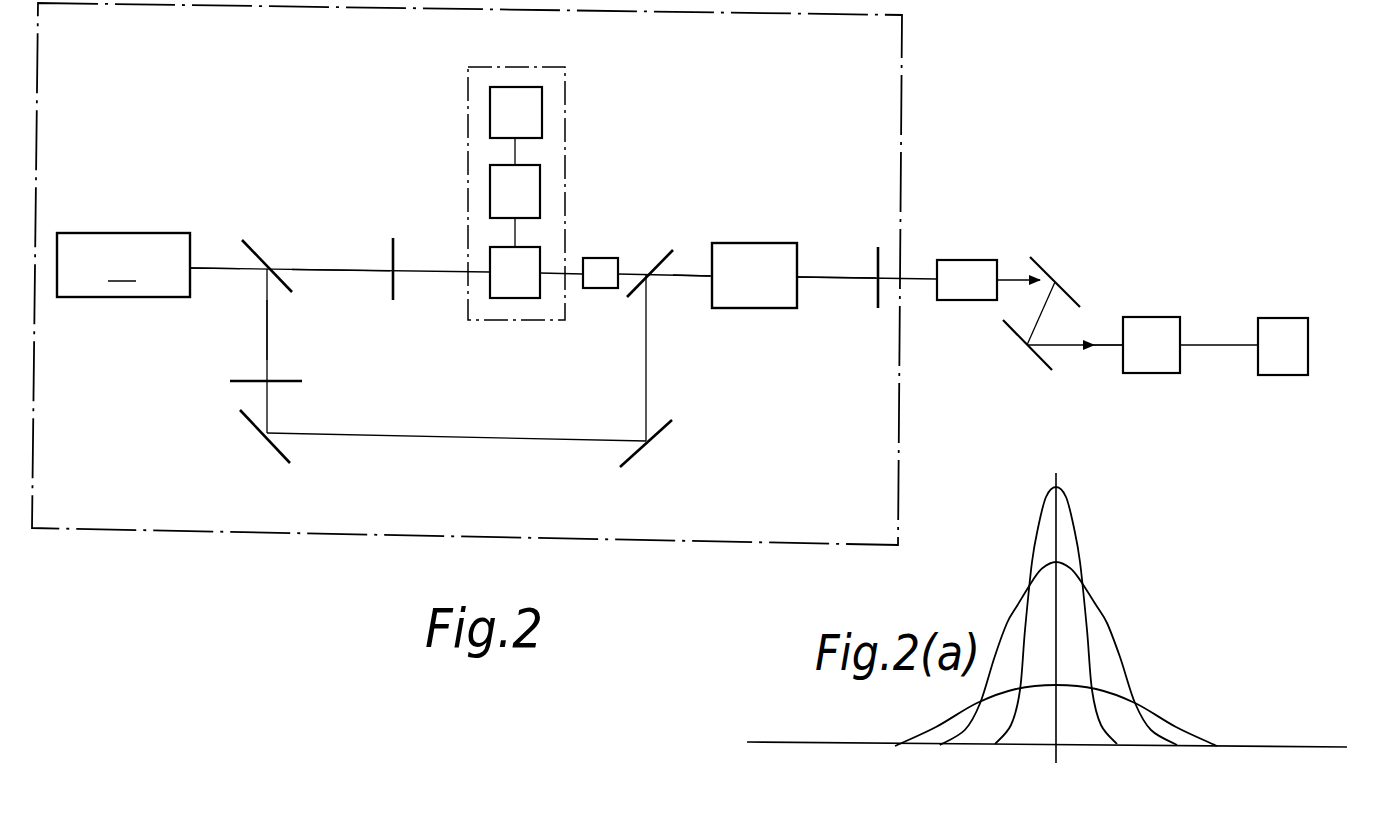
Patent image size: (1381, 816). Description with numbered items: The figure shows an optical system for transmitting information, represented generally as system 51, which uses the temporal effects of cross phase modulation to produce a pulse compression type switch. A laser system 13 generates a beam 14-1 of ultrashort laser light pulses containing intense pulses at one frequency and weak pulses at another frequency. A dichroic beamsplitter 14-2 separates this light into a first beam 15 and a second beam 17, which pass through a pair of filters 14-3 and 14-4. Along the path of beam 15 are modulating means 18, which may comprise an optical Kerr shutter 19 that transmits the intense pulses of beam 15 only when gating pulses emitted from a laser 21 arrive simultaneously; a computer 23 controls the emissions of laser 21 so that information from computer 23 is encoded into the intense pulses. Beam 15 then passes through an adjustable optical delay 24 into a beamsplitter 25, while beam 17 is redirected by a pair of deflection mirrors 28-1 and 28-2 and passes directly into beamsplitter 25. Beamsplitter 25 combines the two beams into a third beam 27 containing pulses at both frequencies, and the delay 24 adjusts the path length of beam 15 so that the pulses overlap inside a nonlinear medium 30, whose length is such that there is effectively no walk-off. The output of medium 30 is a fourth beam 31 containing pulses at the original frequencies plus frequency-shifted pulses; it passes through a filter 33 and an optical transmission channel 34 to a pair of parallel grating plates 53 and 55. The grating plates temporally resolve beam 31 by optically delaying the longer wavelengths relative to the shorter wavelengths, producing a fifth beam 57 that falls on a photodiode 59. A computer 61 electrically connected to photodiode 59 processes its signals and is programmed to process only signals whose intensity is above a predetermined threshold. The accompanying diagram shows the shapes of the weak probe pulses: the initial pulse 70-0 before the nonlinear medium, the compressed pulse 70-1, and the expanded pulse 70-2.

In FIG. 2, the laser system 13 is at (123, 265).
In FIG. 2, the beam of ultrashort laser light pulses 14-1 is at (218, 268).
In FIG. 2, the dichroic beamsplitter 14-2 is at (258, 250).
In FIG. 2, the filter 14-3 is at (396, 254).
In FIG. 2, the filter 14-4 is at (290, 381).
In FIG. 2, the first beam 15 is at (333, 268).
In FIG. 2, the second beam 17 is at (268, 330).
In FIG. 2, the modulating means 18 is at (468, 83).
In FIG. 2, the optical Kerr shutter 19 is at (543, 253).
In FIG. 2, the laser 21 is at (540, 183).
In FIG. 2, the computer 23 is at (542, 108).
In FIG. 2, the adjustable optical delay 24 is at (618, 263).
In FIG. 2, the beamsplitter 25 is at (626, 293).
In FIG. 2, the third beam 27 is at (690, 279).
In FIG. 2, the deflection mirror 28-1 is at (276, 448).
In FIG. 2, the deflection mirror 28-2 is at (630, 462).
In FIG. 2, the nonlinear medium 30 is at (757, 243).
In FIG. 2, the fourth beam 31 is at (829, 280).
In FIG. 2, the filter 33 is at (875, 259).
In FIG. 2, the optical transmission channel 34 is at (968, 258).
In FIG. 2, the optical system for transmitting information 51 is at (977, 440).
In FIG. 2, the grating plate 53 is at (1040, 262).
In FIG. 2, the grating plate 55 is at (1042, 365).
In FIG. 2, the fifth beam 57 is at (1107, 344).
In FIG. 2, the photodiode 59 is at (1163, 318).
In FIG. 2, the computer 61 is at (1277, 318).
In FIG. 2A, the initial pulse 70-0 is at (1105, 623).
In FIG. 2A, the compressed pulse 70-1 is at (1075, 520).
In FIG. 2A, the expanded pulse 70-2 is at (1159, 709).